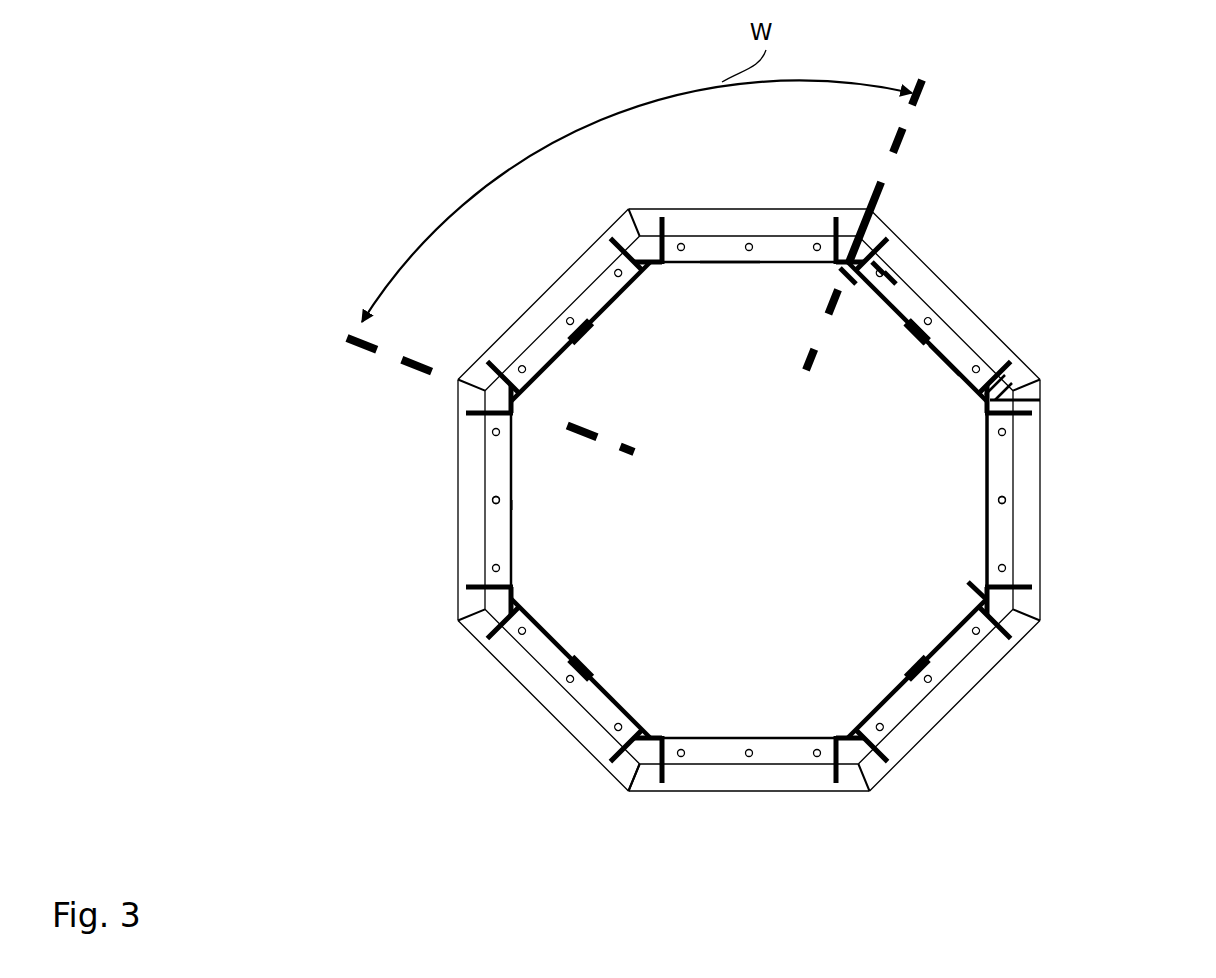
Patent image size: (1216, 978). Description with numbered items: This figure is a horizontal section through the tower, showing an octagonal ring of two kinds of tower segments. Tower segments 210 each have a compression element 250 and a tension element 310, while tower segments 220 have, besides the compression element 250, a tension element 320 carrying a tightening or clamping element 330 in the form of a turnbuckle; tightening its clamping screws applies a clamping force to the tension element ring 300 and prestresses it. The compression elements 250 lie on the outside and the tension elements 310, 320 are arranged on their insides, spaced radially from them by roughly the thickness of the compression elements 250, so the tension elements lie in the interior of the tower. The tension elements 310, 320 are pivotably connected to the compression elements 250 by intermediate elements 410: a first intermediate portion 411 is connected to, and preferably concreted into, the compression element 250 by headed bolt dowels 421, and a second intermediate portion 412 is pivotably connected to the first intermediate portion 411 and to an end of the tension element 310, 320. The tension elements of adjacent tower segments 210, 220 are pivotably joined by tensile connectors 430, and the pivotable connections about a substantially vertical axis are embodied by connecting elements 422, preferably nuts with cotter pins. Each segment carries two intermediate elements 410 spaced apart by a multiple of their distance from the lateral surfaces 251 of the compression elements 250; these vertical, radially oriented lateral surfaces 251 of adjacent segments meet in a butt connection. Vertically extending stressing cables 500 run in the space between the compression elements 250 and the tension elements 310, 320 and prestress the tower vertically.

The tower segment 210 is at (727, 198).
The tower segment 220 is at (538, 274).
The compression element 250 is at (622, 210).
The lateral surface 251 is at (622, 792).
The tension element ring 300 is at (536, 512).
The tension element 310 is at (720, 263).
The tension element 320 is at (940, 353).
The clamping element 330 is at (912, 332).
The intermediate element 410 is at (823, 216).
The first intermediate portion 411 is at (890, 275).
The second intermediate portion 412 is at (893, 282).
The headed bolt dowel 421 is at (1038, 418).
The connecting element 422 is at (1010, 400).
The tensile connector 430 is at (847, 277).
The stressing cable 500 is at (493, 497).